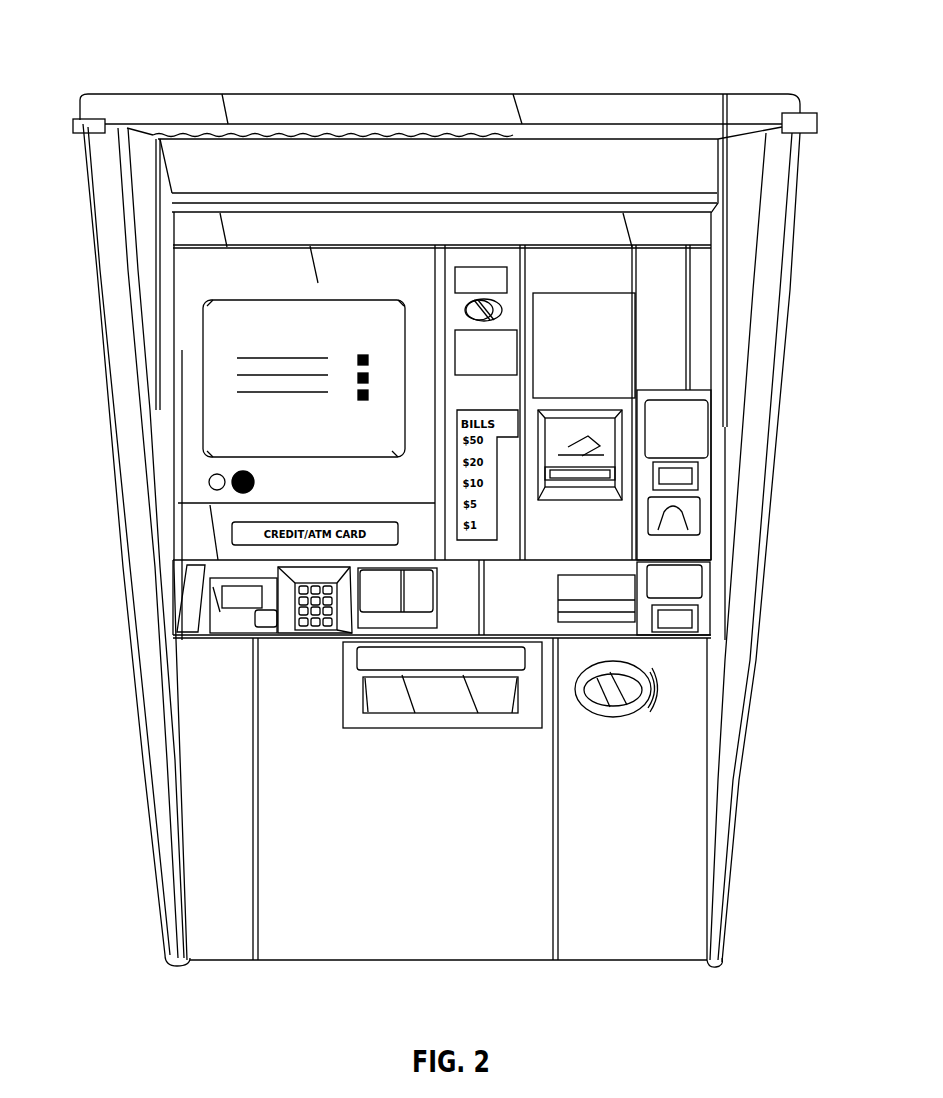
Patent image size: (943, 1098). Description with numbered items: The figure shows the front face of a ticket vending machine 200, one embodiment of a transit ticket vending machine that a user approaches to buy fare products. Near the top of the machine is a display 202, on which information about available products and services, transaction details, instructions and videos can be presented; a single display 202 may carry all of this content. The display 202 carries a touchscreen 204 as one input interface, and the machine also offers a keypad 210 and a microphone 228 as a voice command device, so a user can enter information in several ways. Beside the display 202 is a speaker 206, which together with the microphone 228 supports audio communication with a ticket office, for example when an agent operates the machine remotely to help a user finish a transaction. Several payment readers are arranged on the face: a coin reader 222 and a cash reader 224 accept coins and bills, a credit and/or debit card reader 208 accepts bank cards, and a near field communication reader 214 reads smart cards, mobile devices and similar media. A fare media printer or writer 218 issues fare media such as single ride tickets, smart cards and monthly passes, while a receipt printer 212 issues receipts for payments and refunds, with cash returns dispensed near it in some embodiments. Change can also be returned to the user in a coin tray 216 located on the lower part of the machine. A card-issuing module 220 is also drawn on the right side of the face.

The ticket vending machine 200 is at (42, 35).
The display 202 is at (361, 433).
The touchscreen 204 is at (227, 360).
The speaker 206 is at (209, 481).
The microphone 228 is at (233, 489).
The credit and/or debit card reader 208 is at (218, 638).
The keypad 210 is at (318, 638).
The receipt printer 212 is at (448, 703).
The near field communication (NFC) reader 214 is at (433, 595).
The coin tray 216 is at (628, 720).
The fare media printer or writer 218 is at (680, 617).
The metro card dispenser 220 is at (700, 490).
The coin reader 222 is at (502, 312).
The cash reader 224 is at (592, 432).